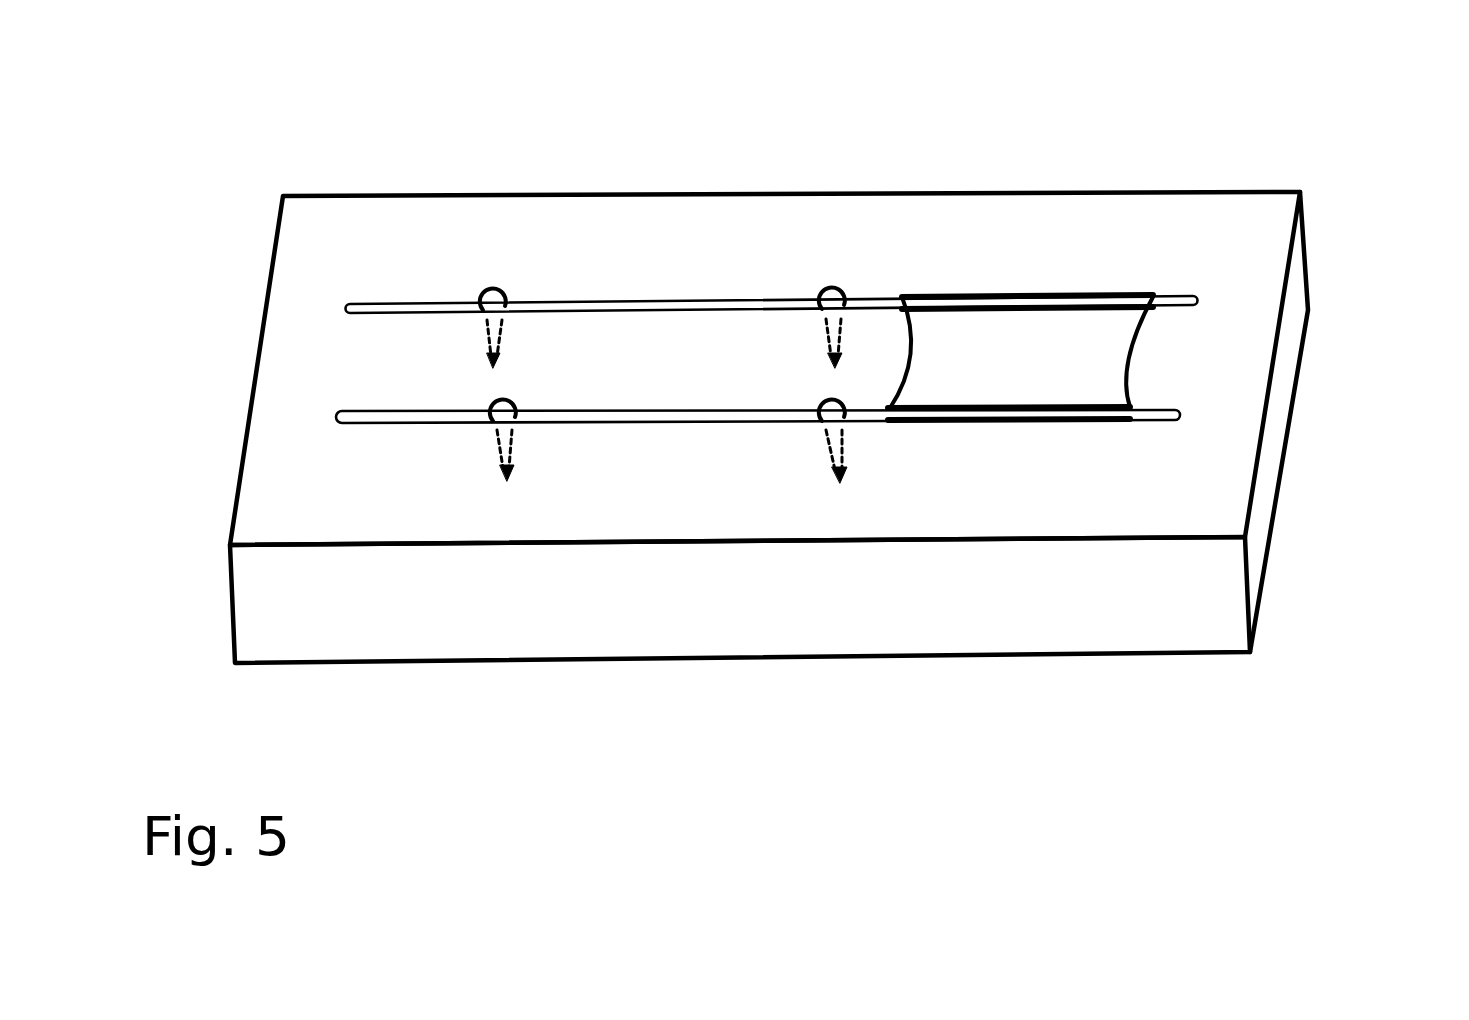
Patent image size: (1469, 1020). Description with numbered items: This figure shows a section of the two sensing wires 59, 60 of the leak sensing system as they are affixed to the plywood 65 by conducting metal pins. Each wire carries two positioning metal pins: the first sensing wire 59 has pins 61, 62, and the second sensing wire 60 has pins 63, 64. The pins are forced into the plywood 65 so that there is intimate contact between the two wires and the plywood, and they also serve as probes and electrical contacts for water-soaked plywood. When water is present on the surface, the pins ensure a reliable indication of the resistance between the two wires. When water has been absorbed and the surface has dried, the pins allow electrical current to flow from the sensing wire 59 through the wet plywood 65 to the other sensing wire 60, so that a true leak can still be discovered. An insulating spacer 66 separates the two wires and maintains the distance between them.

The sensing wire 59 is at (328, 310).
The sensing wire 60 is at (318, 417).
The positioning metal pin 61 is at (492, 275).
The positioning metal pin 62 is at (834, 272).
The positioning metal pin 63 is at (485, 493).
The positioning metal pin 64 is at (828, 493).
The plywood 65 is at (1083, 607).
The membrane 66 is at (1148, 358).